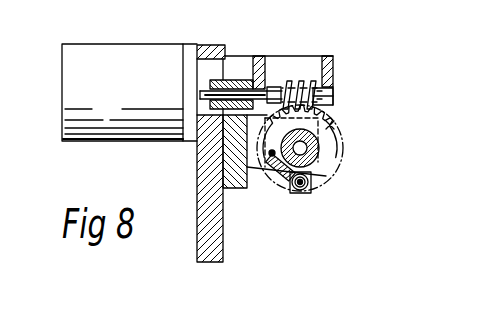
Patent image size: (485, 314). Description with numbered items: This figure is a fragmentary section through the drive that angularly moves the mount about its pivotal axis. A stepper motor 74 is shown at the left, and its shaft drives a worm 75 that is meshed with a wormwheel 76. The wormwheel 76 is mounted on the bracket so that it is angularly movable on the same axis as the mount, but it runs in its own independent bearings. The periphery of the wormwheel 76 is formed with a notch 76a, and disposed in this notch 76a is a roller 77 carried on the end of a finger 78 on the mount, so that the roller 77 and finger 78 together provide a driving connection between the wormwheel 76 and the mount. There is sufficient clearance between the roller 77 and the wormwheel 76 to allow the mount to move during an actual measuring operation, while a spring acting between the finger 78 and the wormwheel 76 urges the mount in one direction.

The stepper motor 74 is at (167, 52).
The worm 75 is at (291, 82).
The wormwheel 76 is at (323, 129).
The notch 76a is at (316, 190).
The roller 77 is at (287, 185).
The finger 78 is at (299, 196).